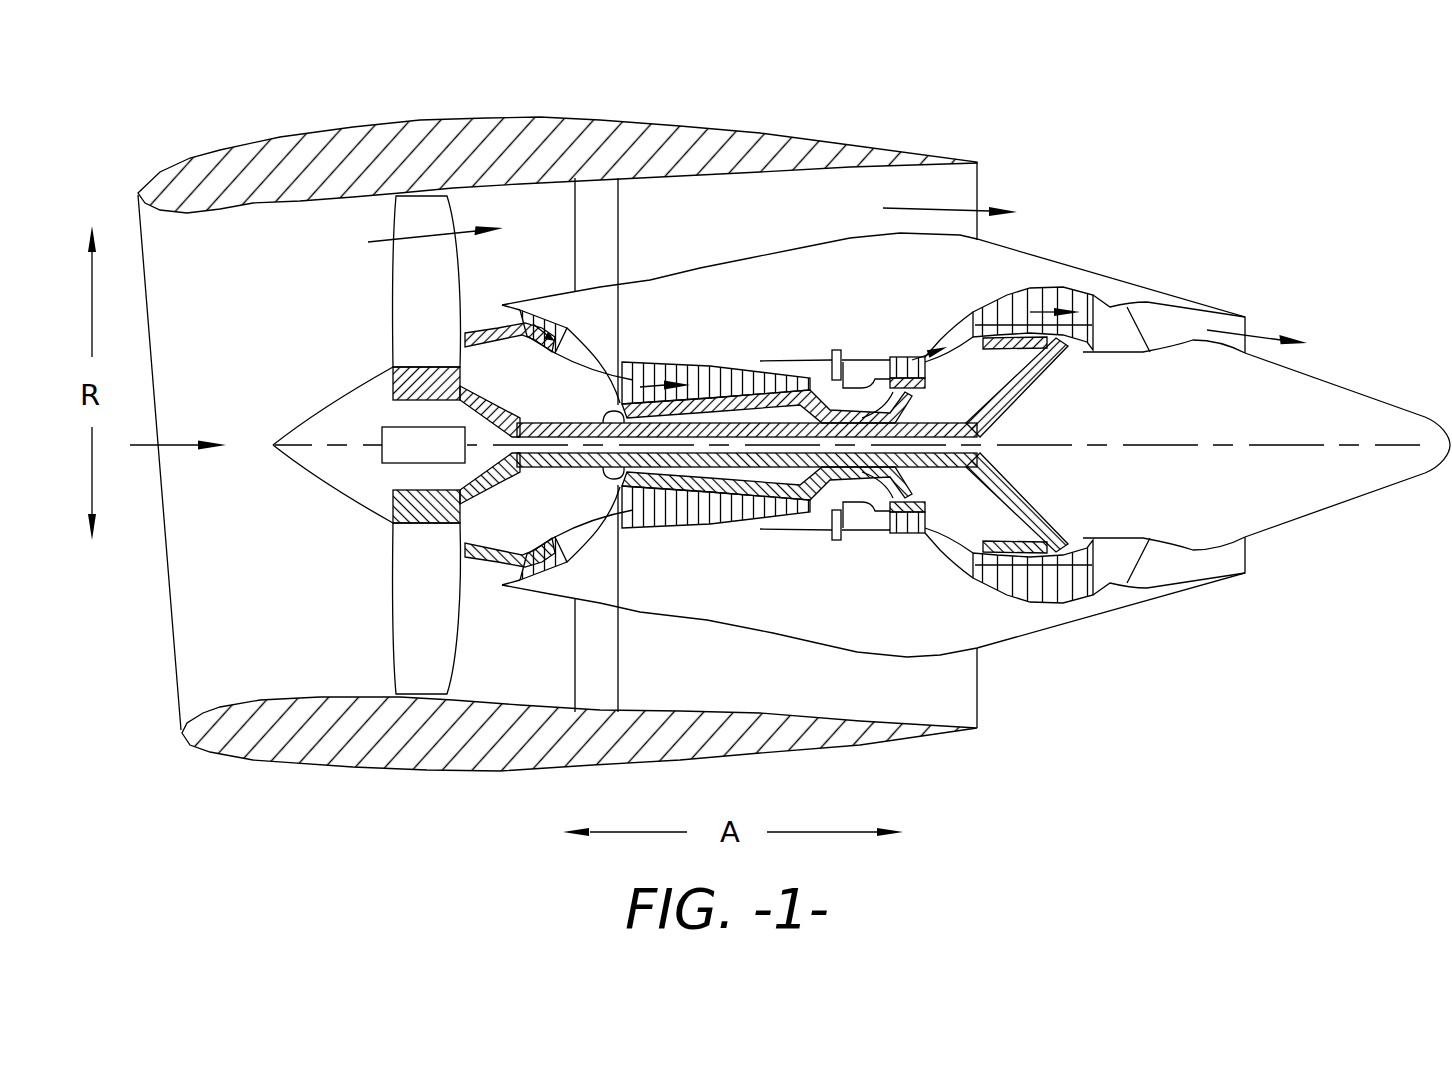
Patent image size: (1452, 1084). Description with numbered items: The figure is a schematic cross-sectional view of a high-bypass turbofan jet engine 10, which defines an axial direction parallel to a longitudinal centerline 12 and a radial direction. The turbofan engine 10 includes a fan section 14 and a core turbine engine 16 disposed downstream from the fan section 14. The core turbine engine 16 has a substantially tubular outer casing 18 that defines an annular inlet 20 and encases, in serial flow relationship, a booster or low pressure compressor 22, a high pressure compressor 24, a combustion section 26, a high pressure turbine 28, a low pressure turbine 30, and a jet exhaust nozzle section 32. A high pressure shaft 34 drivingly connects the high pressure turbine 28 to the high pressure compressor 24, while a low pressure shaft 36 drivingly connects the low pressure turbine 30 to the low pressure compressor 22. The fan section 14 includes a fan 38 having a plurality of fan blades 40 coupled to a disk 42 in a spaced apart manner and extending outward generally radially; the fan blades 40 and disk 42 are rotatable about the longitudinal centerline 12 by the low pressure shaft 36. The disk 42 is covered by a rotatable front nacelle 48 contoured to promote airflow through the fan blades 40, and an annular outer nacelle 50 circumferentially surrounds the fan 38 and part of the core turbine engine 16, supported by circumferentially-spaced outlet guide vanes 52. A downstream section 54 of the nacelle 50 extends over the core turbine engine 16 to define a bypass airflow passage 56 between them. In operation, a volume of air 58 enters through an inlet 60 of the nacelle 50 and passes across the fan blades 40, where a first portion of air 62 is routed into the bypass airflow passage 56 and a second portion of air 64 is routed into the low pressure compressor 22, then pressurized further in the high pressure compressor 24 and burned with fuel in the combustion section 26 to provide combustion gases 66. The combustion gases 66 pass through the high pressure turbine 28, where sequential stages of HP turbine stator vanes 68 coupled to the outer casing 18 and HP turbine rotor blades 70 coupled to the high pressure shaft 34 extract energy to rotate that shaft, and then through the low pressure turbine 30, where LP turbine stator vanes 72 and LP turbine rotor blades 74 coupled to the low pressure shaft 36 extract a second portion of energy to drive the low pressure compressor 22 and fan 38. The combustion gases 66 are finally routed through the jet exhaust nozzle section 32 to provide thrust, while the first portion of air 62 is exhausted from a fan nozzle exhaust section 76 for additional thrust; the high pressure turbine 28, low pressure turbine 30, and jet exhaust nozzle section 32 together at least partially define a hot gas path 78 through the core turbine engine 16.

The turbofan engine 10 is at (1232, 191).
The longitudinal centerline 12 is at (1157, 445).
The fan section 14 is at (478, 105).
The core turbine engine 16 is at (794, 310).
The outer casing 18 is at (817, 643).
The annular inlet 20 is at (501, 573).
The low pressure compressor 22 is at (580, 543).
The high pressure compressor 24 is at (656, 525).
The combustion section 26 is at (845, 535).
The high pressure turbine 28 is at (923, 523).
The low pressure turbine 30 is at (1077, 600).
The jet exhaust nozzle section 32 is at (1247, 320).
The high pressure shaft 34 is at (907, 393).
The low pressure shaft 36 is at (578, 423).
The fan 38 is at (372, 283).
The fan blades 40 is at (387, 637).
The disk 42 is at (390, 385).
The front nacelle 48 is at (313, 412).
The outer nacelle 50 is at (440, 772).
The outlet guide vanes 52 is at (619, 204).
The downstream section of the nacelle 54 is at (785, 125).
The bypass airflow passage 56 is at (768, 225).
The volume of air 58 is at (175, 445).
The inlet 60 is at (175, 683).
The first portion of air 62 is at (405, 238).
The second portion of air 64 is at (485, 320).
The combustion gases 66 is at (910, 356).
The HP turbine stator vanes 68 is at (893, 537).
The HP turbine rotor blades 70 is at (912, 540).
The LP turbine stator vanes 72 is at (993, 577).
The LP turbine rotor blades 74 is at (993, 580).
The fan nozzle exhaust section 76 is at (977, 188).
The hot gas path 78 is at (965, 325).